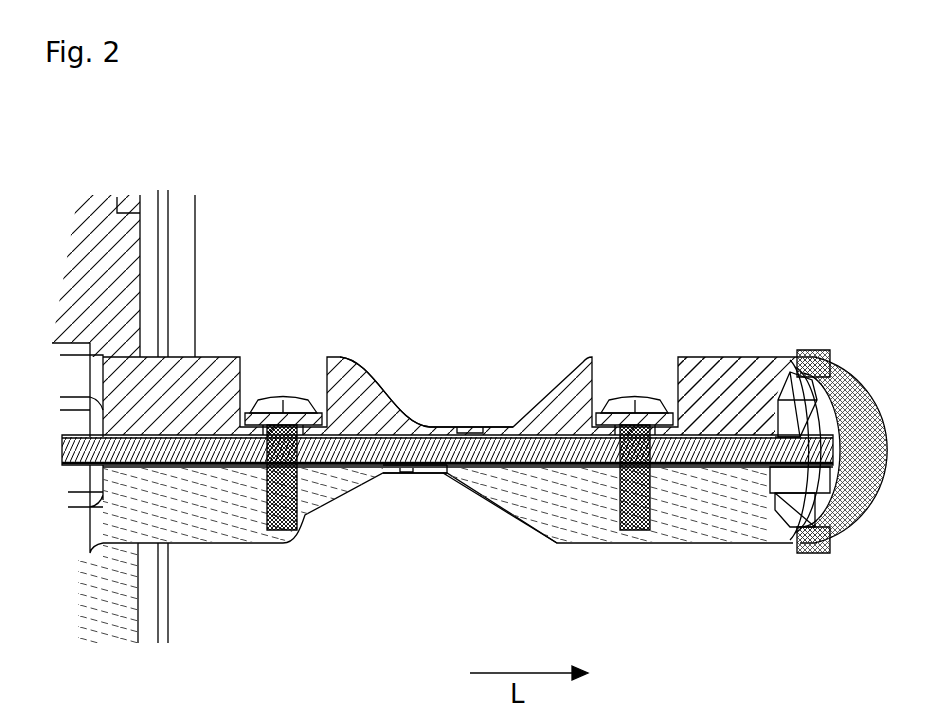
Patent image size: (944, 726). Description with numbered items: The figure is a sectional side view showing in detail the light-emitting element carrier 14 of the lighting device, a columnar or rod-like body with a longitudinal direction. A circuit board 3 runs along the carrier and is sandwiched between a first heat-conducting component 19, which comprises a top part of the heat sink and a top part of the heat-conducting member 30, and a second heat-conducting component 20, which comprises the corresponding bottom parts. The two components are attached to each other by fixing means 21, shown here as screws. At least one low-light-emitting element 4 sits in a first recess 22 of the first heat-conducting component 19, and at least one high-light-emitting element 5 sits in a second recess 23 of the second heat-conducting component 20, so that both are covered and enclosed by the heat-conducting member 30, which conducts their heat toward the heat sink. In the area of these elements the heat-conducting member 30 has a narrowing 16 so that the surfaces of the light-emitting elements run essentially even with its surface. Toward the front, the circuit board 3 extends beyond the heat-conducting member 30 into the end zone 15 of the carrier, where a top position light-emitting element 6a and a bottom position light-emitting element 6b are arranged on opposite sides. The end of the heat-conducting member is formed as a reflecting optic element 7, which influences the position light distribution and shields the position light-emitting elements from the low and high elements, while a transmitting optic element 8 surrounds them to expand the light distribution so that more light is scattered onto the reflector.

The light-emitting element carrier 14 is at (520, 240).
The circuit board 3 is at (175, 450).
The low-light-emitting element 4 is at (478, 428).
The high-light-emitting element 5 is at (418, 465).
The top position light-emitting element 6a is at (800, 450).
The bottom position light-emitting element 6b is at (800, 450).
The reflecting optic element 7 is at (785, 393).
The transmitting optic element 8 is at (835, 535).
The end zone of the light-emitting element carrier 15 is at (784, 320).
The narrowing 16 is at (414, 378).
The first heat-conducting component 19 is at (208, 367).
The second heat-conducting component 20 is at (240, 530).
The fixing means 21 is at (288, 520).
The first recess 22 is at (458, 430).
The second recess 23 is at (405, 475).
The heat-conducting member 30 is at (708, 380).